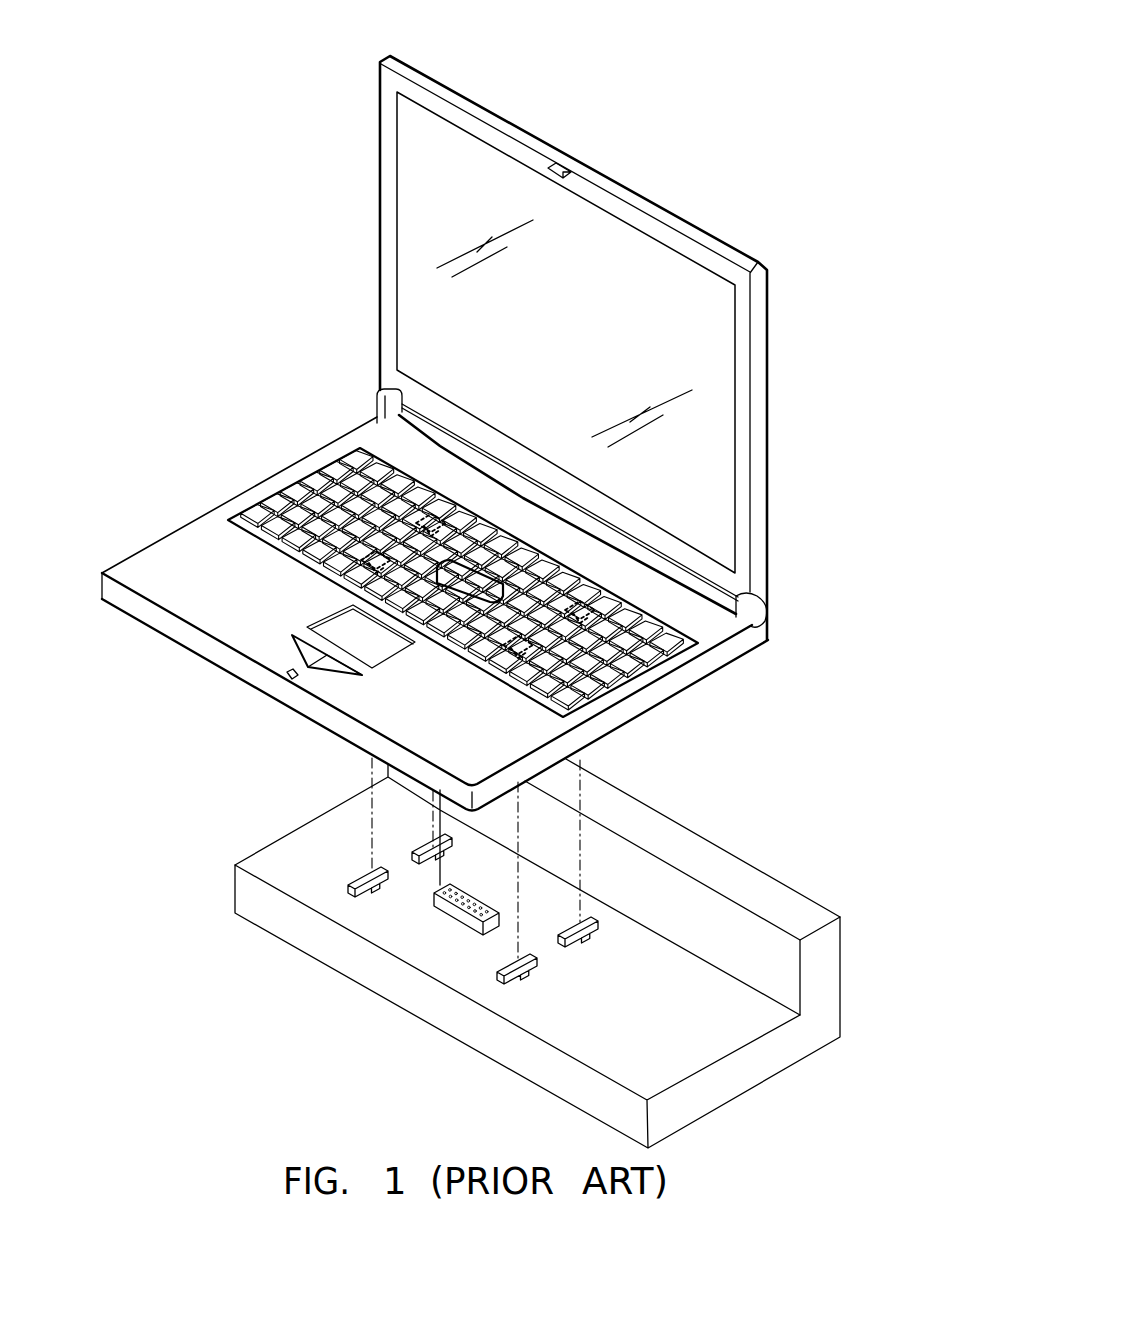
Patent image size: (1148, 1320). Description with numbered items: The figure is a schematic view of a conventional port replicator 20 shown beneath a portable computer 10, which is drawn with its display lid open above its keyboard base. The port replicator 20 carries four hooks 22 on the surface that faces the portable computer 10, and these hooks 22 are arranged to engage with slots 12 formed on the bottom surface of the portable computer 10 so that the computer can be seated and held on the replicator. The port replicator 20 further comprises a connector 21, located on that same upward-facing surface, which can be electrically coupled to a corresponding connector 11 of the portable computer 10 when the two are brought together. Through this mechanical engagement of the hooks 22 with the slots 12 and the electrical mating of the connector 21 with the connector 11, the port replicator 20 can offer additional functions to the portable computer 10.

The portable computer 10 is at (380, 224).
The connector 11 is at (553, 560).
The slots 12 is at (431, 522).
The port replicator 20 is at (688, 852).
The connector 21 is at (475, 916).
The hooks 22 is at (362, 880).